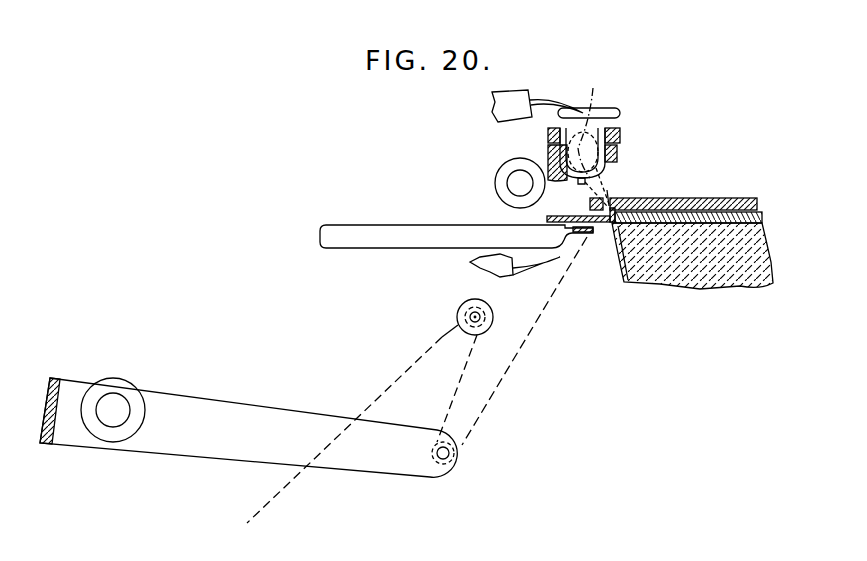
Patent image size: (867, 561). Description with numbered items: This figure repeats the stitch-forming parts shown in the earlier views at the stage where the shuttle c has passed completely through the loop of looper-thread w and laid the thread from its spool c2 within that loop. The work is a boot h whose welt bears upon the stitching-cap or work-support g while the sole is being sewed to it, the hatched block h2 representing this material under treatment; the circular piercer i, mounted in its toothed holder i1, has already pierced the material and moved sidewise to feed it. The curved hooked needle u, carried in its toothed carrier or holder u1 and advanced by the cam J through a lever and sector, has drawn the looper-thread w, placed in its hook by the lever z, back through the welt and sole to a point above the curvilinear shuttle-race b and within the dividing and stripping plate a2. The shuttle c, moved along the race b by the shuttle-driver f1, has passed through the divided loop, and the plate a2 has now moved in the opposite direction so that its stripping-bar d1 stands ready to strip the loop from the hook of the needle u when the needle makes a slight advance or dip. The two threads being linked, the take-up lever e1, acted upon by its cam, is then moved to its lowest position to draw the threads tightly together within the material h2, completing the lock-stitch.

The take-up lever e1 is at (248, 427).
The looper-thread w is at (618, 178).
The lever z is at (456, 237).
The holder i1 is at (491, 265).
The circular piercer i is at (536, 262).
The carrier or holder u1 is at (512, 106).
The curved hooked needle u is at (556, 97).
The dividing and stripping plate a2 is at (589, 105).
The stripping-bar d1 is at (589, 125).
The curvilinear shuttle-race b is at (543, 153).
The shuttle-driver f1 is at (618, 135).
The shuttle c is at (603, 170).
The cam J is at (520, 183).
The spool c2 is at (613, 188).
The stitching-cap or work-support g is at (578, 209).
The boot h is at (676, 199).
The base block h2 is at (692, 256).